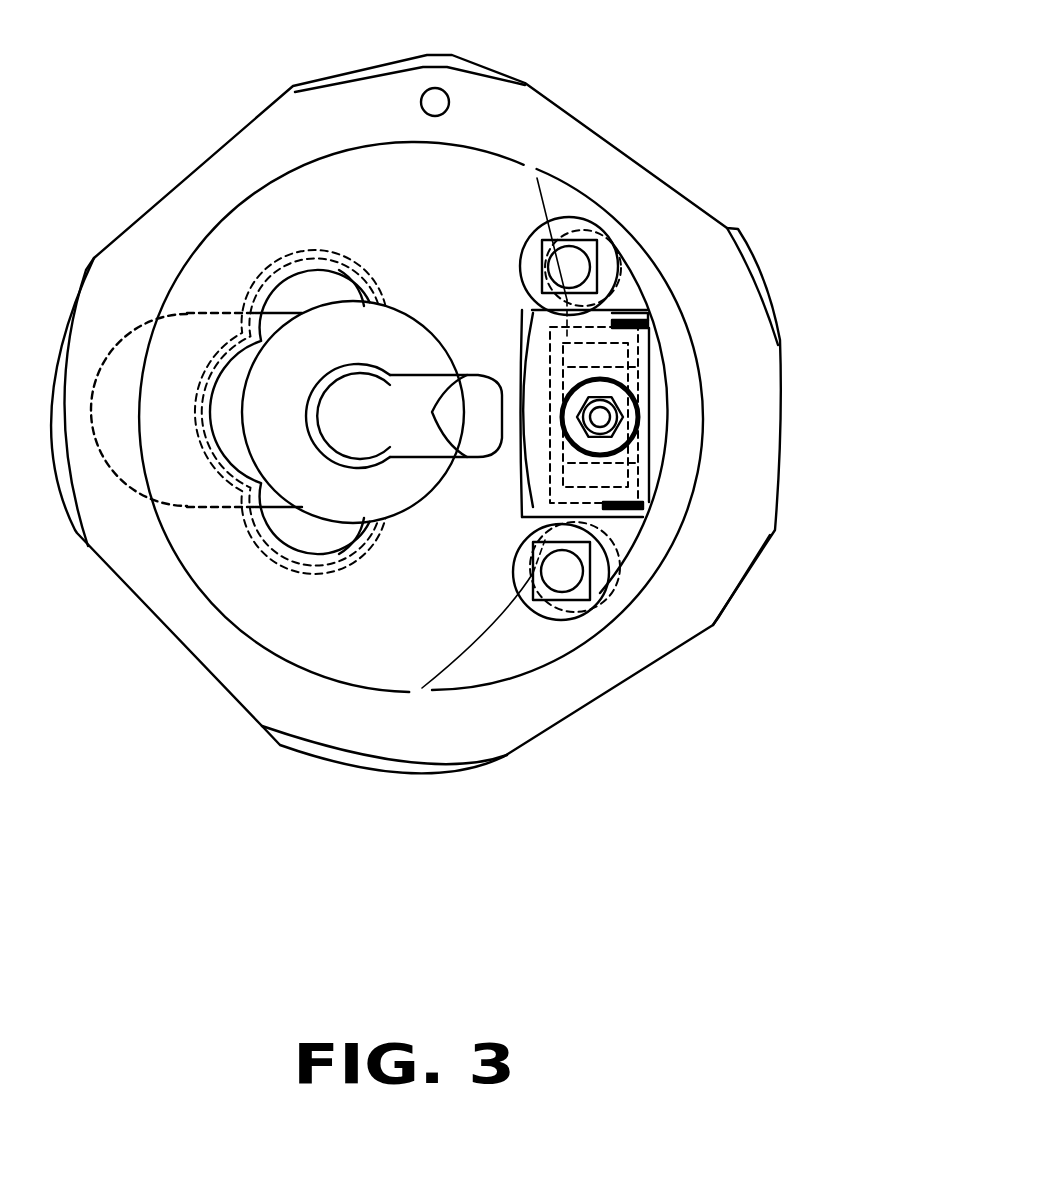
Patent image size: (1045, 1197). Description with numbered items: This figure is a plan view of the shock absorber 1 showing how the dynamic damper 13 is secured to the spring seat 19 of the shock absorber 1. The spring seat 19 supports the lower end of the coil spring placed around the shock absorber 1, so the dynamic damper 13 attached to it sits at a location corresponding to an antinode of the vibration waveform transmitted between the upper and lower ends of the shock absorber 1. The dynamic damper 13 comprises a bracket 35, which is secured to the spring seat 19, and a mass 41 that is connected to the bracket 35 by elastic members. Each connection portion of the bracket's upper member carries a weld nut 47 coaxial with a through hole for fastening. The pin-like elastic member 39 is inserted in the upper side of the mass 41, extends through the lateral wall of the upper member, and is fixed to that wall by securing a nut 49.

The shock absorber 1 is at (195, 125).
The spring seat 19 is at (644, 188).
The weld nut 47 is at (598, 248).
The nut 49 is at (607, 390).
The dynamic damper 13 is at (682, 388).
The mass 41 is at (641, 421).
The elastic member 39 is at (632, 430).
The bracket 35 is at (650, 492).